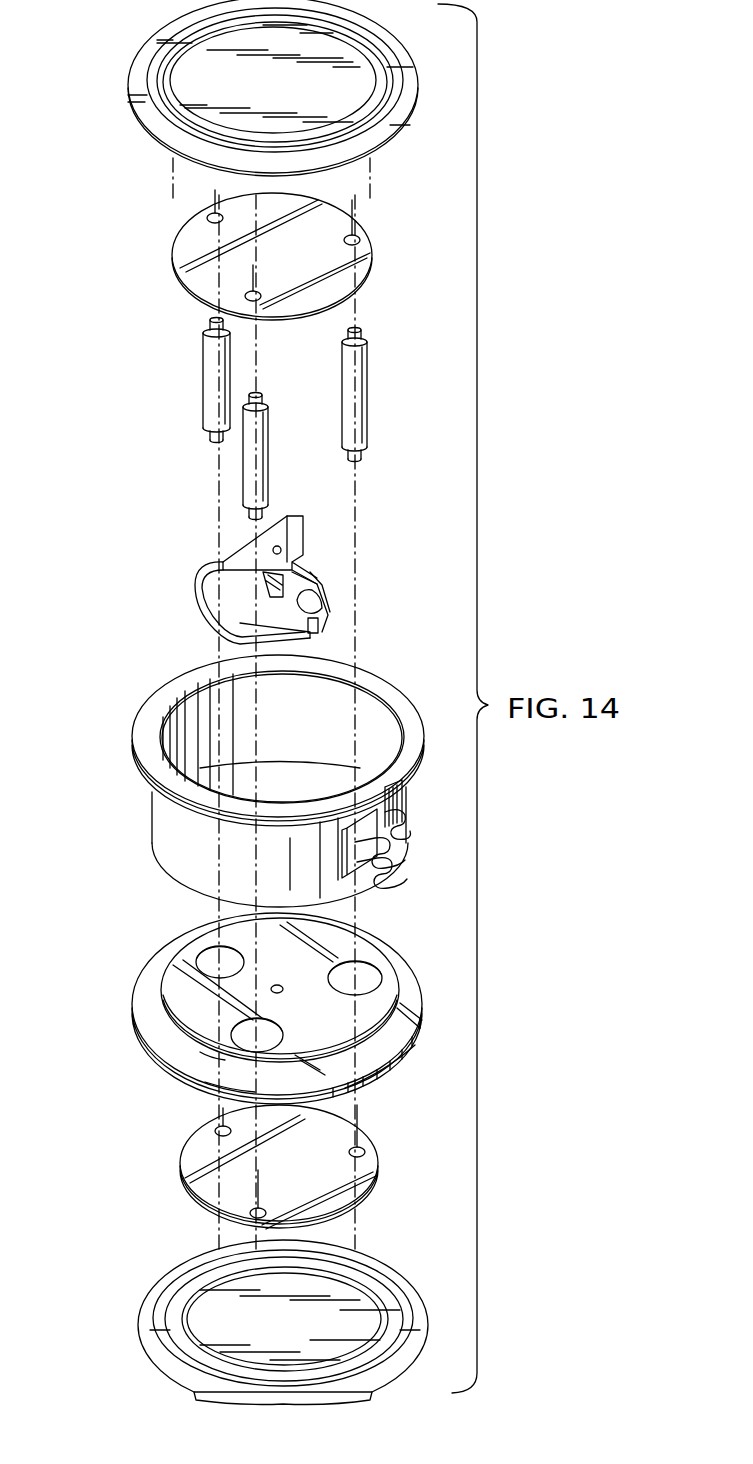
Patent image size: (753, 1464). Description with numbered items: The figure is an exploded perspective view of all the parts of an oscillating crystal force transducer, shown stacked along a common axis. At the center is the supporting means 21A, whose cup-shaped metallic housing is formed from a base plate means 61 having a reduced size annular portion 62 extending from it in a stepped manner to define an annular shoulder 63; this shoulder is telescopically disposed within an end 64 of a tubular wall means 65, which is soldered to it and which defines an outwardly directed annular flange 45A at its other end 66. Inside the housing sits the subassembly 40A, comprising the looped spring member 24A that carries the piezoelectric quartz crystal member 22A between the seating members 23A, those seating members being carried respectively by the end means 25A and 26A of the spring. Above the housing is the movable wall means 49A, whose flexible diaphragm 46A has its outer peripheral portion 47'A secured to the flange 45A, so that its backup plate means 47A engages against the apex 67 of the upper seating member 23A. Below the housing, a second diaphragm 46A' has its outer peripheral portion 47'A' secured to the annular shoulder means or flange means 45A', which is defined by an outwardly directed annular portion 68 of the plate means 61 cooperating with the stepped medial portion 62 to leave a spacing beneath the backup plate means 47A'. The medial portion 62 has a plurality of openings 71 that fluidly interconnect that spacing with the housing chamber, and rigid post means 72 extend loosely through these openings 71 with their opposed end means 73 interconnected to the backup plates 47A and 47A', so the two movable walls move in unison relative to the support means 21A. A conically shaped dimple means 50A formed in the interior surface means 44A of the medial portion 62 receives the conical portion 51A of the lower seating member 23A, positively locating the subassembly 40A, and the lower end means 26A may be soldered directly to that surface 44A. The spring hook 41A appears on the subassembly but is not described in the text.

The flexible diaphragm 46A is at (273, 86).
The movable wall means 49A is at (206, 69).
The outer peripheral portion 47'A is at (231, 132).
The backup plate means 47A is at (232, 255).
The rigid post means 72 is at (208, 368).
The opposed end means 73 is at (373, 332).
The subassembly 40A is at (182, 587).
The conical portion 51A is at (250, 535).
The seating members 23A is at (293, 533).
The apex 67 is at (277, 548).
The end means 25A is at (322, 547).
The piezoelectric quartz crystal member 22A is at (313, 567).
The looped spring member 24A is at (197, 612).
The spring hook 41A is at (335, 598).
The end means 26A is at (288, 630).
The supporting means 21A is at (160, 848).
The annular flange 45A is at (302, 740).
The other end 66 is at (152, 795).
The tubular wall means 65 is at (150, 815).
The end 64 is at (190, 890).
The interior surface means 44A is at (370, 1010).
The base plate means 61 is at (165, 1045).
The reduced size annular portion 62 is at (175, 990).
The openings 71 is at (197, 958).
The dimple means 50A is at (287, 972).
The annular shoulder 63 is at (210, 1047).
The outwardly directed annular portion 68 is at (213, 1082).
The annular shoulder means or flange means 45A' is at (405, 1074).
The backup plate means 47A' is at (244, 1167).
The diaphragm 46A' is at (293, 1313).
The outer peripheral portion 47'A' is at (220, 1339).